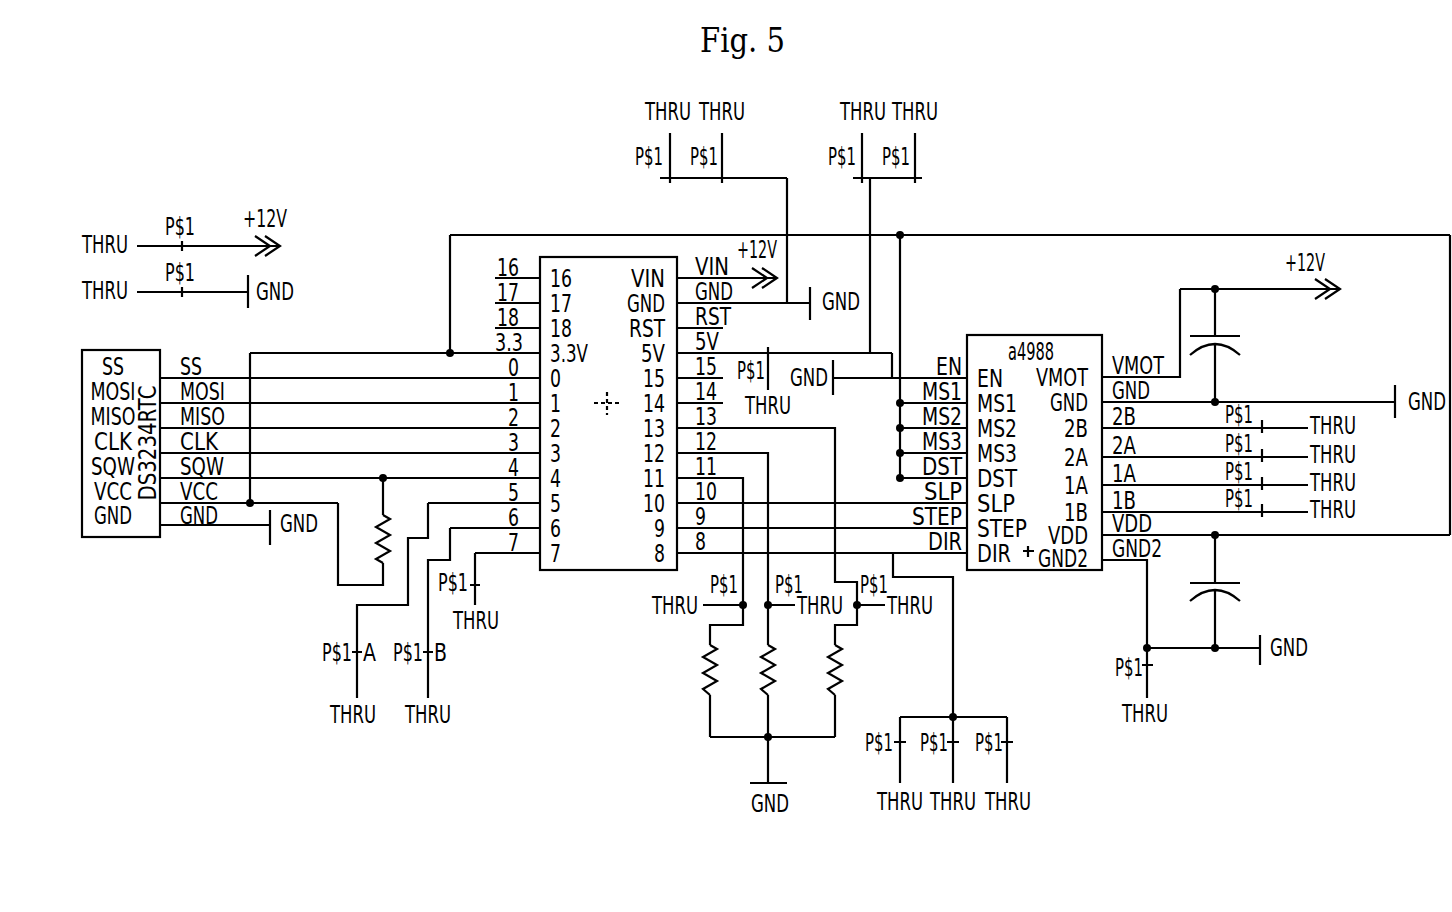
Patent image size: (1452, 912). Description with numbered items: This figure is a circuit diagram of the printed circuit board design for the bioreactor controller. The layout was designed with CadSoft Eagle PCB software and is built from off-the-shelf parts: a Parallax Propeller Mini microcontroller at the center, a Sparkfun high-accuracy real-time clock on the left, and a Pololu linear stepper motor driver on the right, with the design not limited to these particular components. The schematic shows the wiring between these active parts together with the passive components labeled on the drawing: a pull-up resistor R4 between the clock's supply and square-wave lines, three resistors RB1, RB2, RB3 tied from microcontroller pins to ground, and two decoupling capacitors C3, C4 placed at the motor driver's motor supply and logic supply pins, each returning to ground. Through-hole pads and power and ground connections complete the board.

The 10k pull-up resistor R4 is at (379, 529).
The 10k resistor RB1 is at (839, 671).
The 10k resistor RB2 is at (774, 671).
The 10k resistor RB3 is at (714, 671).
The 0.1uF capacitor C3 is at (1229, 347).
The 0.1uF capacitor C4 is at (1230, 591).